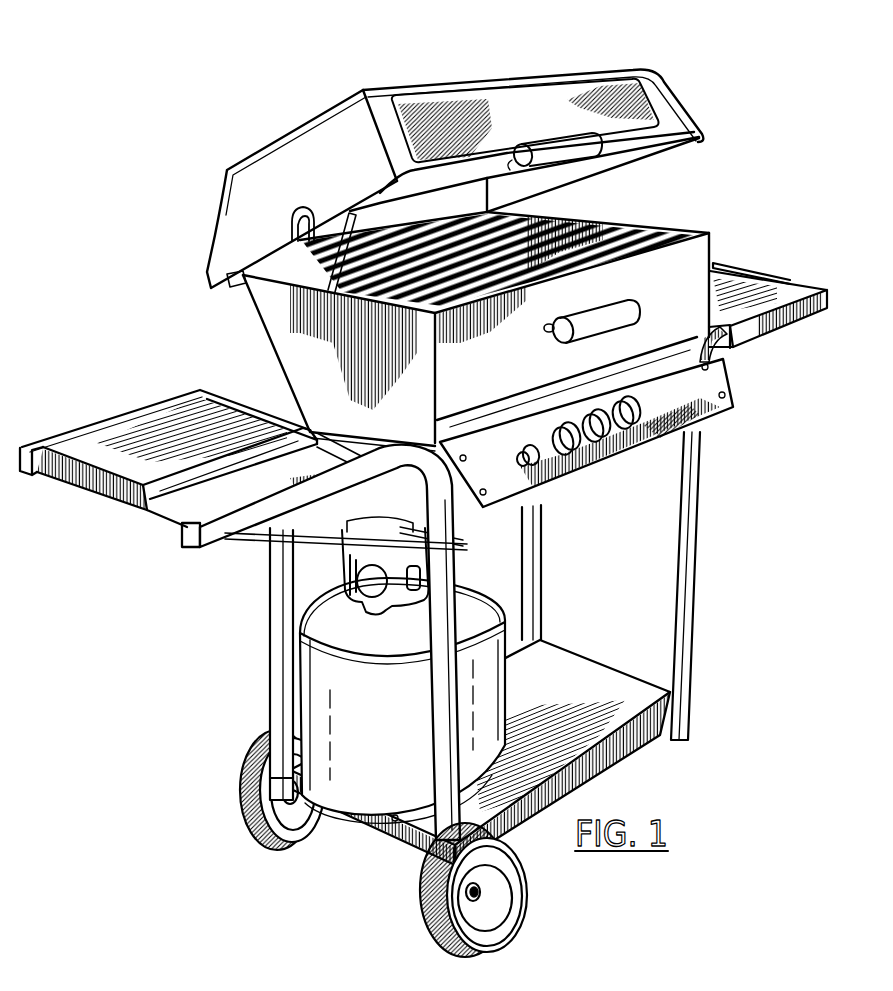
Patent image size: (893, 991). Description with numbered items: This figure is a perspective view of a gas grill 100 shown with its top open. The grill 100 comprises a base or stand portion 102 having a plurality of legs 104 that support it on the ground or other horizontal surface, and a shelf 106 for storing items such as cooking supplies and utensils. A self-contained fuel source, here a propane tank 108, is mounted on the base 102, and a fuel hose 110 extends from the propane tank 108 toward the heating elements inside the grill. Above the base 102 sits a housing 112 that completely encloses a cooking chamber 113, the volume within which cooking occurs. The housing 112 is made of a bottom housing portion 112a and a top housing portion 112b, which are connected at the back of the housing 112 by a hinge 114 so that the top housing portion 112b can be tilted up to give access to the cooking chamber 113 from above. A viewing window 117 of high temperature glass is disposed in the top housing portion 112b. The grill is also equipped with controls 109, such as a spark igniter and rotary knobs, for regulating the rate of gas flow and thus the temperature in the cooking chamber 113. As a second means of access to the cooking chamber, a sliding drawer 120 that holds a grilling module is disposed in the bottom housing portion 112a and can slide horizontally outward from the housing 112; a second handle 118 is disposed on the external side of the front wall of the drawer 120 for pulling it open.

The grill 100 is at (529, 52).
The base or stand portion 102 is at (718, 576).
The legs 104 is at (272, 637).
The shelf 106 is at (557, 670).
The propane tank 108 is at (347, 777).
The controls 109 is at (652, 398).
The fuel hose 110 is at (268, 541).
The housing 112 is at (212, 350).
The bottom housing portion 112a is at (277, 350).
The top housing portion 112b is at (277, 172).
The cooking chamber 113 is at (610, 243).
The hinge 114 is at (236, 292).
The viewing window 117 is at (623, 103).
The second handle 118 is at (563, 339).
The sliding drawer 120 is at (702, 320).